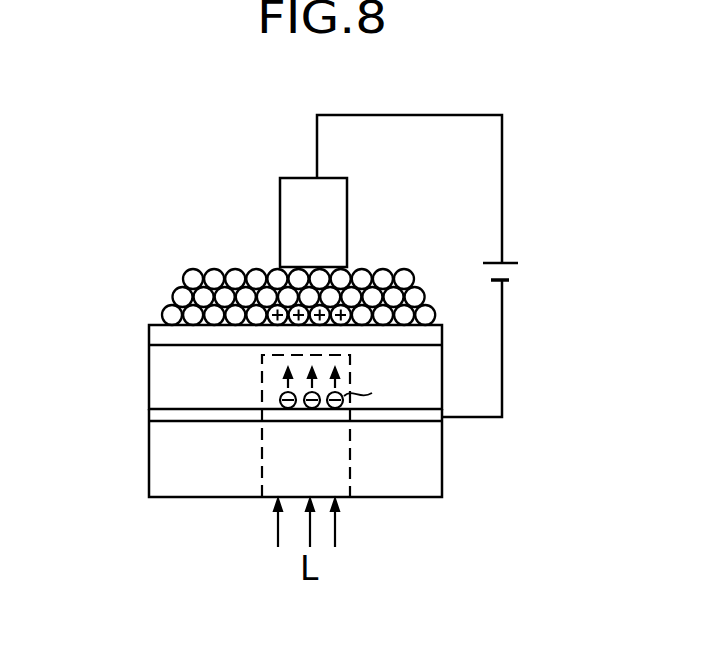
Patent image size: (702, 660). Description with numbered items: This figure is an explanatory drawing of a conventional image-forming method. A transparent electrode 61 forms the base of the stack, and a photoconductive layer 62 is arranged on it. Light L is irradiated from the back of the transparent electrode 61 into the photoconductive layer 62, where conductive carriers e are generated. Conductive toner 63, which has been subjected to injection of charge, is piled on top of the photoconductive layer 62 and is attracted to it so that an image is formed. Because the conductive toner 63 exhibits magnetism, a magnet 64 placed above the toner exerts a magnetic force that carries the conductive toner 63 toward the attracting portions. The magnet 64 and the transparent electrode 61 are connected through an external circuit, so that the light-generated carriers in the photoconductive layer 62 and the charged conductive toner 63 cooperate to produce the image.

The transparent electrode 61 is at (172, 418).
The photoconductive layer 62 is at (428, 372).
The conductive toner 63 is at (195, 278).
The magnet 64 is at (338, 200).